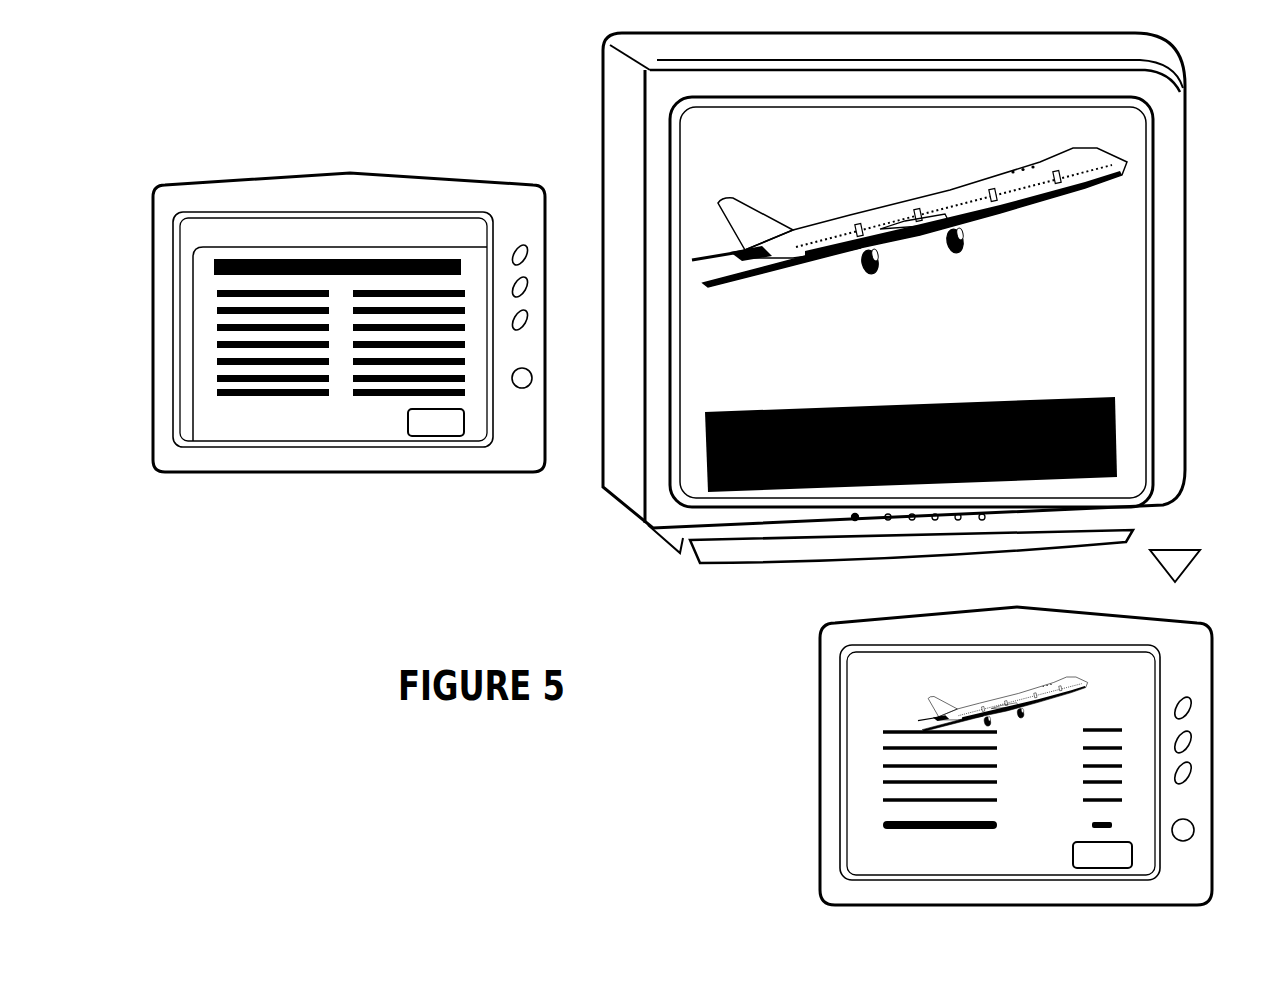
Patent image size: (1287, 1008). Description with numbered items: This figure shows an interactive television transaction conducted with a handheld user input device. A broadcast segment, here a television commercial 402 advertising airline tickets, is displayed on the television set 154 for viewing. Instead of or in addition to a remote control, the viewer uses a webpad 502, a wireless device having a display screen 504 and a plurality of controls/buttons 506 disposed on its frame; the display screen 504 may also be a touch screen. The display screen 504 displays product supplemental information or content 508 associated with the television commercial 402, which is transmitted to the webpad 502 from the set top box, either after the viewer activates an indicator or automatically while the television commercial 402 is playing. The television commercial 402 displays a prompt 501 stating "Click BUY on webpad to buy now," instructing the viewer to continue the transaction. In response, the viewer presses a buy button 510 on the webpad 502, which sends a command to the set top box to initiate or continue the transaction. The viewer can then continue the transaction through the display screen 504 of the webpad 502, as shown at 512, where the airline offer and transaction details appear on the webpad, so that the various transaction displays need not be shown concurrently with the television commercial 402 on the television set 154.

The television set 154 is at (1172, 127).
The television commercial 402 is at (1118, 220).
The prompt 501 is at (1117, 443).
The webpad 502 is at (270, 453).
The display screen 504 is at (188, 237).
The controls/buttons 506 is at (523, 248).
The content 508 is at (370, 396).
The buy button 510 is at (452, 435).
The webpad display of continued transaction 512 is at (830, 700).